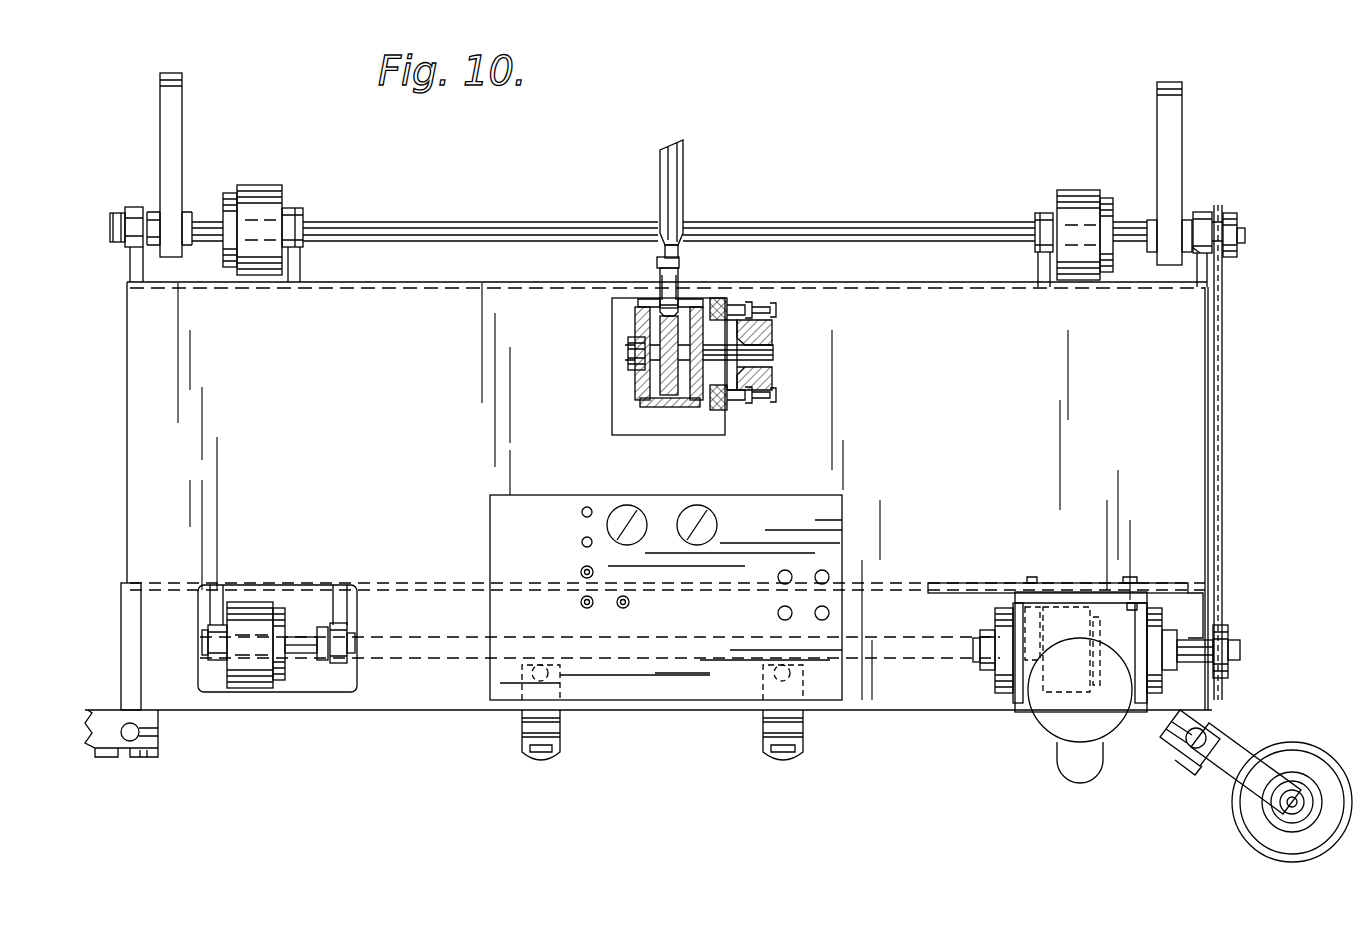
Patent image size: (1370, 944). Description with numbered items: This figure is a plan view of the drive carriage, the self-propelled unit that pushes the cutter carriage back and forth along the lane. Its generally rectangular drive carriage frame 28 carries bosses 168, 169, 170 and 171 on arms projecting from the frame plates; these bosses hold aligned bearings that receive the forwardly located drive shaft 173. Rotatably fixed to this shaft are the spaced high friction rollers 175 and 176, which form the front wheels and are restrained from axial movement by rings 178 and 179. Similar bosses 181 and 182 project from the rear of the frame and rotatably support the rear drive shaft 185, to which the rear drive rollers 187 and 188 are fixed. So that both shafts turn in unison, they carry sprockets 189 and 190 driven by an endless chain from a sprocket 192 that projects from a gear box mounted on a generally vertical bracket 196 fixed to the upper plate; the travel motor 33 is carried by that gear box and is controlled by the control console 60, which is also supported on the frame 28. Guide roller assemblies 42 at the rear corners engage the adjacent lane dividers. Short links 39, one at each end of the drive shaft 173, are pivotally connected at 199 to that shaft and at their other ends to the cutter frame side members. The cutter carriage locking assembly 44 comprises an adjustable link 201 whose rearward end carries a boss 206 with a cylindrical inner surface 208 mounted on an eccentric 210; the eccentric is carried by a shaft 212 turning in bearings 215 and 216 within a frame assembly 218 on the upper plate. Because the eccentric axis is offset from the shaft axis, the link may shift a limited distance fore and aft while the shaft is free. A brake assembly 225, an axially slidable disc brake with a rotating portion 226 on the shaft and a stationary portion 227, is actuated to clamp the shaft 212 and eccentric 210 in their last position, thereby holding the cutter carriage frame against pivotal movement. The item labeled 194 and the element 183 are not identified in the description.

The drive carriage frame 28 is at (1199, 447).
The chain 194 is at (1222, 531).
The short link 39 is at (163, 100).
The drive shaft 173 is at (485, 226).
The boss 168 is at (132, 210).
The ring 178 is at (226, 205).
The high friction roller 175 is at (258, 192).
The boss 169 is at (296, 210).
The boss 170 is at (1043, 214).
The high friction roller 176 is at (1076, 192).
The ring 179 is at (1125, 182).
The boss 171 is at (1203, 211).
The sprocket 190 is at (1233, 216).
The pivotal connection 199 is at (1195, 249).
The adjustable link 201 is at (668, 178).
The cutter carriage locking assembly 44 is at (716, 177).
The boss 206 is at (636, 366).
The bearing 215 is at (632, 330).
The shaft 212 is at (680, 312).
The eccentric 210 is at (665, 355).
The stationary portion 227 is at (725, 300).
The brake assembly 225 is at (771, 326).
The rotating portion 226 is at (793, 342).
The bearing 216 is at (728, 406).
The frame assembly 218 is at (656, 419).
The cylindrical inner surface 208 is at (675, 392).
The control console 60 is at (490, 545).
The rear drive roller 187 is at (258, 605).
The boss 181 is at (213, 657).
The rear drive shaft 185 is at (300, 652).
The boss 182 is at (337, 670).
The bracket 196 is at (1110, 583).
The rear drive roller 188 is at (1063, 615).
The gear 183 is at (1003, 632).
The sprocket 192 is at (1236, 641).
The sprocket 189 is at (1238, 680).
The travel motor 33 is at (1050, 720).
The guide roller assembly 42 is at (1212, 838).